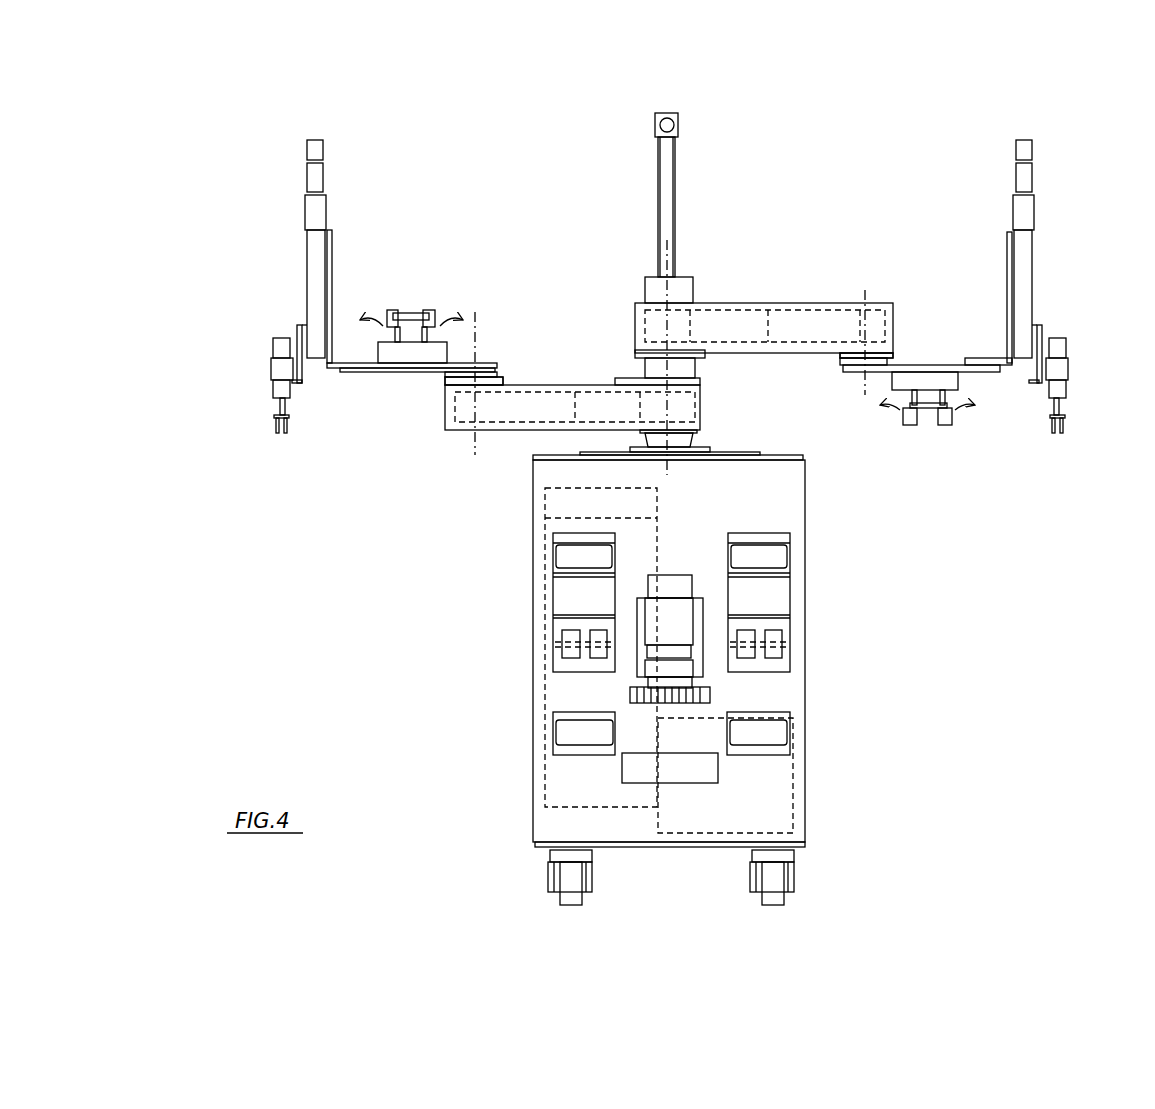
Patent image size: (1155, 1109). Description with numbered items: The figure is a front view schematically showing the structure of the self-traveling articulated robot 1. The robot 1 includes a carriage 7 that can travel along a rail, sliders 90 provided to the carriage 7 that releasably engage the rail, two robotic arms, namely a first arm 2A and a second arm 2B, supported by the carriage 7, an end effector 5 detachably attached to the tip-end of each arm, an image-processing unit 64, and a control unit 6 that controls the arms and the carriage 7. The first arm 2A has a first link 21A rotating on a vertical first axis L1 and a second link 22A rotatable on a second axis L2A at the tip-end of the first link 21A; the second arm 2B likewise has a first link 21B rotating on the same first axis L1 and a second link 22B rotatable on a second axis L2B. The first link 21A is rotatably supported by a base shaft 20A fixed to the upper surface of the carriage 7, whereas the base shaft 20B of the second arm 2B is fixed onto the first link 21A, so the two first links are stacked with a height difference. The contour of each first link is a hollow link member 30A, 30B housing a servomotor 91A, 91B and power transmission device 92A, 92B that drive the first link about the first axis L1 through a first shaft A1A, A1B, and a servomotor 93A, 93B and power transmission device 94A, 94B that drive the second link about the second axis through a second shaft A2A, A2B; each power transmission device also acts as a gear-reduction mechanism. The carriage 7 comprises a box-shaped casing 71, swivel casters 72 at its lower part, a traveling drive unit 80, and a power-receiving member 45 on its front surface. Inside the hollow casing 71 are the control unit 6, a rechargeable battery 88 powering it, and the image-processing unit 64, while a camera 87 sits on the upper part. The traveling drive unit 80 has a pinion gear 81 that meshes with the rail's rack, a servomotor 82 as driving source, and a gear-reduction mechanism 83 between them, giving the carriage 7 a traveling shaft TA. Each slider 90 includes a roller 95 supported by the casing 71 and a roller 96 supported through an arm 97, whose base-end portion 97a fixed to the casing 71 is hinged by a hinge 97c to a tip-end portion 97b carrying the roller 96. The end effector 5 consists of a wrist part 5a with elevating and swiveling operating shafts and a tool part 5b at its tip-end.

The robot 1 is at (587, 160).
The first arm 2A is at (565, 327).
The second arm 2B is at (834, 305).
The end effector 5 is at (669, 361).
The wrist part 5a is at (287, 330).
The tool part 5b is at (275, 405).
The control unit 6 is at (533, 808).
The carriage 7 is at (806, 487).
The base shaft 20A is at (697, 442).
The base shaft 20B is at (700, 365).
The first link 21A is at (445, 390).
The first link 21B is at (797, 300).
The second link 22A is at (377, 370).
The second link 22B is at (982, 375).
The link member 30A is at (520, 377).
The link member 30B is at (887, 302).
The power-receiving member 45 is at (718, 768).
The image-processing unit 64 is at (545, 503).
The casing 71 is at (806, 458).
The swivel casters 72 is at (548, 895).
The traveling drive unit 80 is at (675, 600).
The pinion gear 81 is at (712, 697).
The servomotor 82 is at (693, 615).
The gear-reduction mechanism 83 is at (640, 665).
The camera 87 is at (680, 125).
The rechargeable battery 88 is at (793, 800).
The sliders 90 is at (673, 599).
The servomotor 91A is at (588, 380).
The servomotor 91B is at (730, 297).
The power transmission device 92A is at (638, 370).
The power transmission device 92B is at (692, 268).
The servomotor 93A is at (537, 378).
The servomotor 93B is at (810, 297).
The power transmission device 94A is at (458, 437).
The power transmission device 94B is at (893, 325).
The roller 95 is at (557, 733).
The roller 96 is at (560, 555).
The arm 97 is at (673, 623).
The base-end portion 97a is at (553, 660).
The tip-end portion 97b is at (553, 590).
The hinge 97c is at (565, 640).
The first shaft A1A is at (706, 405).
The first shaft A1B is at (652, 273).
The second shaft A2A is at (440, 418).
The second shaft A2B is at (898, 318).
The first axis L1 is at (663, 247).
The second axis L2A is at (478, 380).
The second axis L2B is at (865, 333).
The traveling shaft TA is at (655, 710).